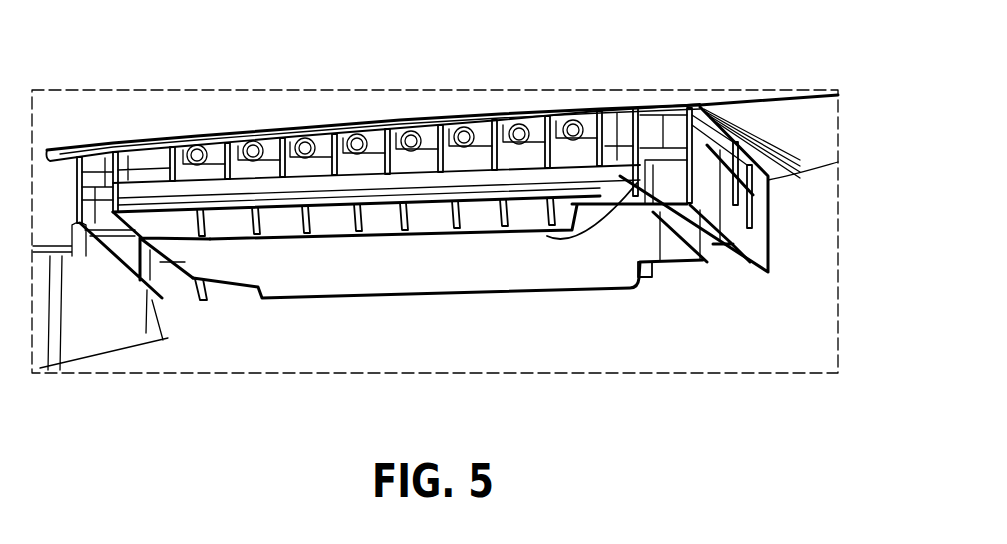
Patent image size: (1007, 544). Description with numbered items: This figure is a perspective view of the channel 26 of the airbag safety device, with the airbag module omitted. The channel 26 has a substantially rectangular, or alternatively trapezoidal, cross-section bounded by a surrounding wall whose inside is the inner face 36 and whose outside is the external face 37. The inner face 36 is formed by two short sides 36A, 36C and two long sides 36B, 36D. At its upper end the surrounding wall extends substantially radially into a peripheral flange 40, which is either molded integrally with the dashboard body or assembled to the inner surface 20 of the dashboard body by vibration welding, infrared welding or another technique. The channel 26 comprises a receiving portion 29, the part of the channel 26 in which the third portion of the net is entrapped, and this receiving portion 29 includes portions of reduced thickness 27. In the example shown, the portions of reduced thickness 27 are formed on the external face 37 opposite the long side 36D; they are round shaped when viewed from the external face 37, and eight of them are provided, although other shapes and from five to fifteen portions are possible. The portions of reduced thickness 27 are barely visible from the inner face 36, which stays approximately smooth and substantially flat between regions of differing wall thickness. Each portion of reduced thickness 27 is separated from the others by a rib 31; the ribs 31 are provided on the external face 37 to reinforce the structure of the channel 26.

The inner surface 20 is at (808, 135).
The channel 26 is at (431, 260).
The portion of reduced thickness 27 is at (357, 145).
The receiving portion 29 is at (390, 178).
The rib 31 is at (603, 140).
The inner face 36 is at (335, 270).
The short side 36A is at (176, 272).
The long side 36B is at (557, 262).
The short side 36C is at (676, 244).
The long side 36D is at (636, 185).
The external face 37 is at (395, 160).
The peripheral flange 40 is at (167, 137).